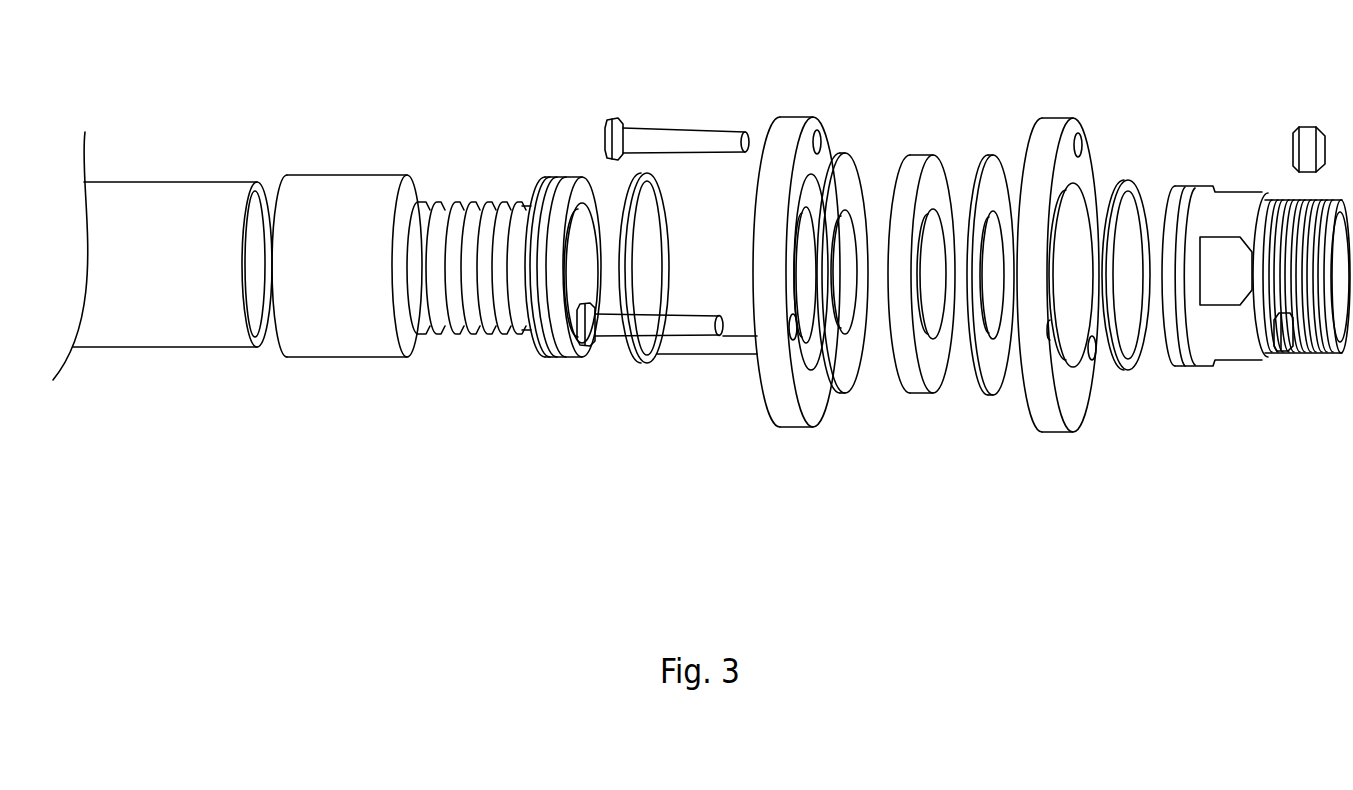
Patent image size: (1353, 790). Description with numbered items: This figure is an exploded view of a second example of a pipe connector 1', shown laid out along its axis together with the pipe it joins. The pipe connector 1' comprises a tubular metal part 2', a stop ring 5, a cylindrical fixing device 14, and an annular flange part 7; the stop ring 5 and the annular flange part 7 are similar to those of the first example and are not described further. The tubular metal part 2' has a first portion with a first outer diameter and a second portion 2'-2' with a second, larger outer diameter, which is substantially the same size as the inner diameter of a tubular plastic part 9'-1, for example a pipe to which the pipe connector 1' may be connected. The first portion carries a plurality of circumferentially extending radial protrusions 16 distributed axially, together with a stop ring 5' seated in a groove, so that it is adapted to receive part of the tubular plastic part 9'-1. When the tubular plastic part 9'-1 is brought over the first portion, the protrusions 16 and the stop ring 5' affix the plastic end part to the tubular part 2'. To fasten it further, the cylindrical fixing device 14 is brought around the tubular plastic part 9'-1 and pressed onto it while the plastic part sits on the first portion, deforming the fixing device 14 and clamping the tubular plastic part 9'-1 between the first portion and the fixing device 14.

The tubular plastic part 9'-1 is at (162, 233).
The fixing device 14 is at (360, 175).
The stop ring 5' is at (433, 235).
The radial protrusions 16 is at (458, 200).
The tubular metal part 2' is at (504, 249).
The second portion 2'-2' is at (563, 293).
The stop ring 5 is at (667, 268).
The annular flange part 7 is at (792, 117).
The pipe connector 1' is at (556, 305).